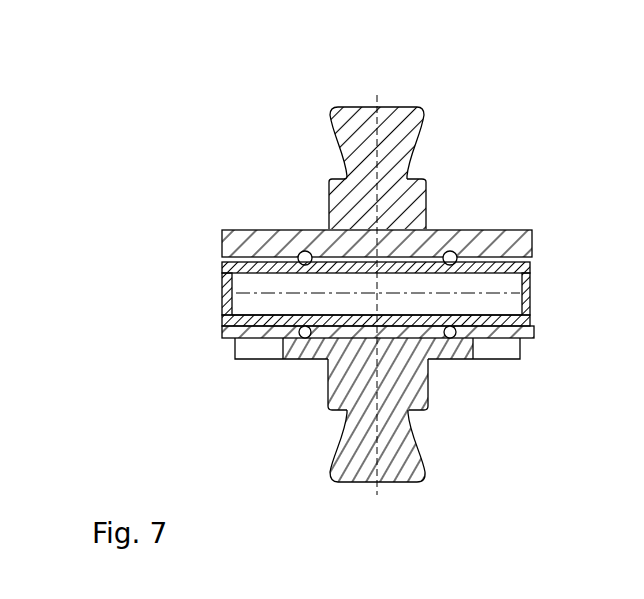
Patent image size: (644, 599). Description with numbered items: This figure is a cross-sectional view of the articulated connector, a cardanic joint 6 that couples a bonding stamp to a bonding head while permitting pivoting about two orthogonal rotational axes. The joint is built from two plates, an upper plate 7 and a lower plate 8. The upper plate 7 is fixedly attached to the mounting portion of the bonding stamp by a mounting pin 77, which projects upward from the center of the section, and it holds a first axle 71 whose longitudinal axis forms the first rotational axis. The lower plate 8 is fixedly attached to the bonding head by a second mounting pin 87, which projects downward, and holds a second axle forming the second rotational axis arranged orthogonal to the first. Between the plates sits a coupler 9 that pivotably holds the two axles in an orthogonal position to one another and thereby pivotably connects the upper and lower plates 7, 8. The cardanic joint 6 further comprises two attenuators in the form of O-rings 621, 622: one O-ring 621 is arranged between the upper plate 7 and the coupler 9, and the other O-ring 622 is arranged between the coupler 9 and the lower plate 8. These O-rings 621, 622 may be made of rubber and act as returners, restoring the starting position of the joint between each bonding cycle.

The cardanic joint 6 is at (160, 329).
The upper plate 7 is at (265, 231).
The first axle 71 is at (244, 290).
The mounting pin 77 is at (357, 120).
The O-ring 621 is at (430, 228).
The O-ring 622 is at (357, 338).
The lower plate 8 is at (236, 347).
The mounting pin 87 is at (364, 464).
The coupler 9 is at (473, 322).